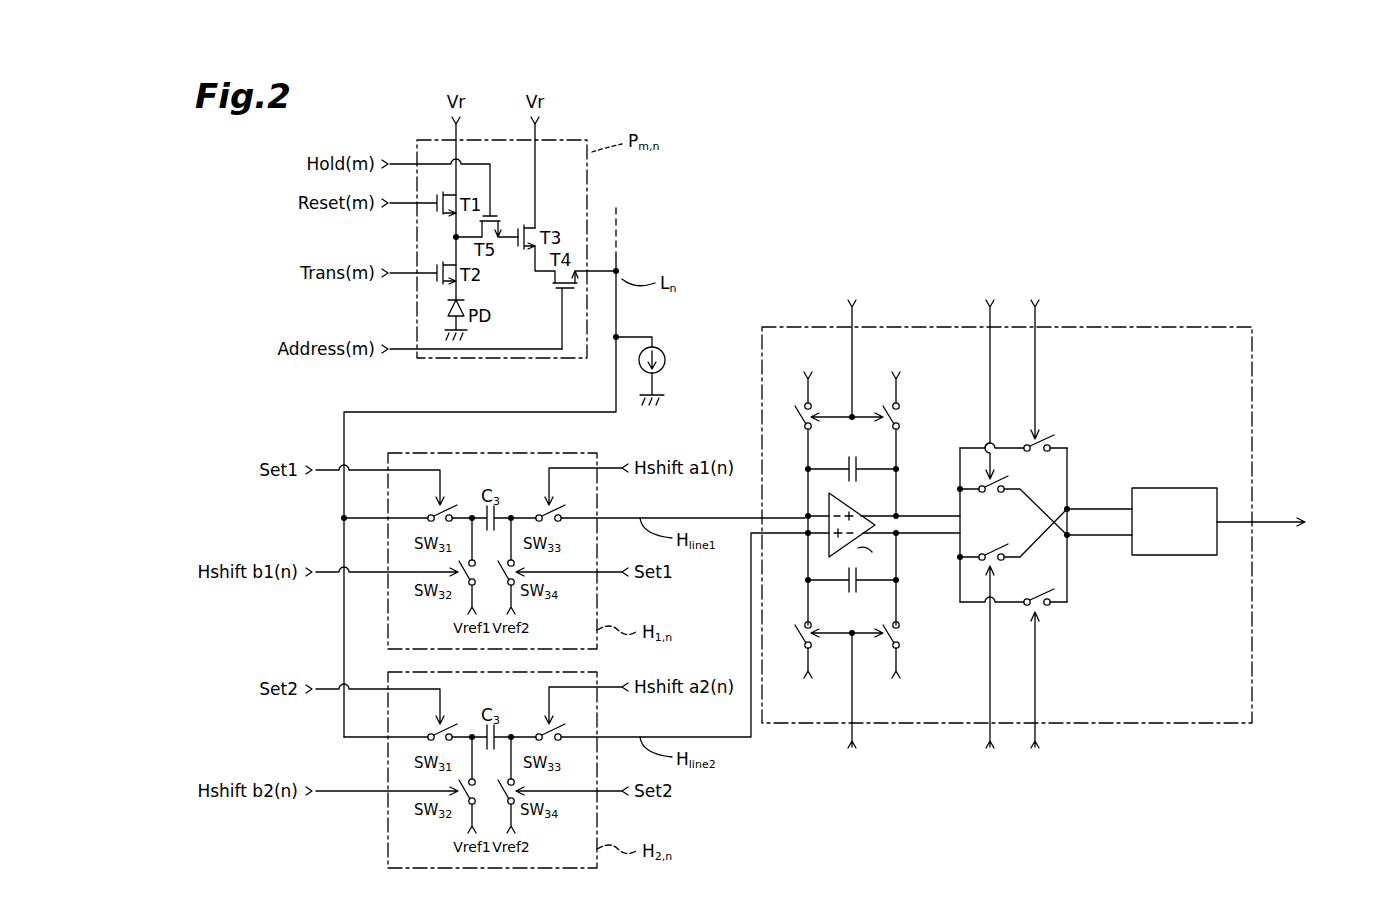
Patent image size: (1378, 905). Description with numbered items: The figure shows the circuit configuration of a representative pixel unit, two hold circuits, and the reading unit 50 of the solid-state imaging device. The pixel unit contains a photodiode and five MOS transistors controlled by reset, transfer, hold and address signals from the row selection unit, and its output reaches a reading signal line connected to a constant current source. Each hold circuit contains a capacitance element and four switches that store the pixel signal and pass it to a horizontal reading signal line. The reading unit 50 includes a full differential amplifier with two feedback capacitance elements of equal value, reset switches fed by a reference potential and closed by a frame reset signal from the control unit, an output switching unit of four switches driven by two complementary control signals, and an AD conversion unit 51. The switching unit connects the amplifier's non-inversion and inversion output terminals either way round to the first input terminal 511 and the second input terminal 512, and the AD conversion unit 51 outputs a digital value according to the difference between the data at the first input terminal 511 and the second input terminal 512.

The reading unit 50 is at (1213, 327).
The AD conversion unit 51 is at (1188, 488).
The first input terminal 511 is at (1125, 509).
The second input terminal 512 is at (1121, 535).